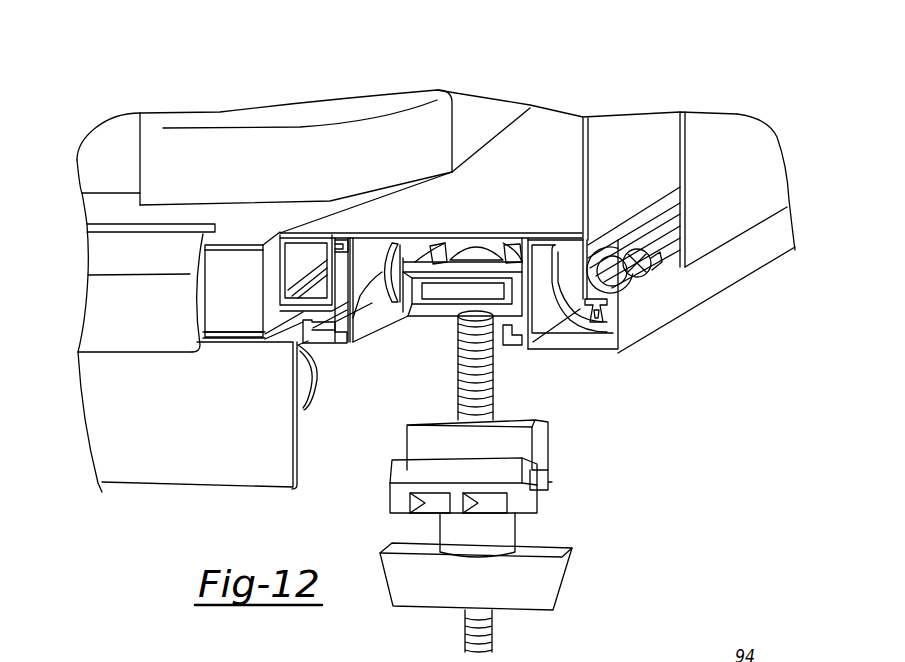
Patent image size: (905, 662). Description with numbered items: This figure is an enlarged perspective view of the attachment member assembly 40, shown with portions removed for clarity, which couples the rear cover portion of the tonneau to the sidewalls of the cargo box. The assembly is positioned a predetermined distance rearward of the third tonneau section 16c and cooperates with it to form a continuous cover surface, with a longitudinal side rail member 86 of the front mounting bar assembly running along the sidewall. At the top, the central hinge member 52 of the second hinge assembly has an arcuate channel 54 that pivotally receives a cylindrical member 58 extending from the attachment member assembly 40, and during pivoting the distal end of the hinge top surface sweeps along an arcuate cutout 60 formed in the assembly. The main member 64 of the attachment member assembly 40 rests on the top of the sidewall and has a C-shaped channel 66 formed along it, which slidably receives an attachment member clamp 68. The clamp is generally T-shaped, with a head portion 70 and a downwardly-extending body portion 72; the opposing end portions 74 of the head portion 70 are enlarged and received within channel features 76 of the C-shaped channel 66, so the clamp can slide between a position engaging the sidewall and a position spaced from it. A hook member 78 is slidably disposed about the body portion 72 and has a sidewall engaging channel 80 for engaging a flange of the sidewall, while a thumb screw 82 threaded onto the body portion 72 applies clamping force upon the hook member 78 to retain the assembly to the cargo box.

The third tonneau section 16c is at (130, 130).
The attachment member assembly 40 is at (465, 226).
The central hinge member 52 is at (757, 138).
The arcuate channels 54 is at (610, 243).
The cylindrical member 58 is at (618, 300).
The arcuate cutout 60 is at (566, 280).
The main member 64 is at (522, 232).
The C-shaped channel 66 is at (428, 332).
The attachment member clamp 68 is at (553, 483).
The head portion 70 is at (431, 268).
The body portion 72 is at (457, 393).
The opposing end portions 74 is at (377, 292).
The channel features 76 is at (517, 343).
The hook member 78 is at (547, 440).
The sidewall engaging channel 80 is at (535, 493).
The thumb screw 82 is at (560, 592).
The longitudinal side rail members 86 is at (187, 460).